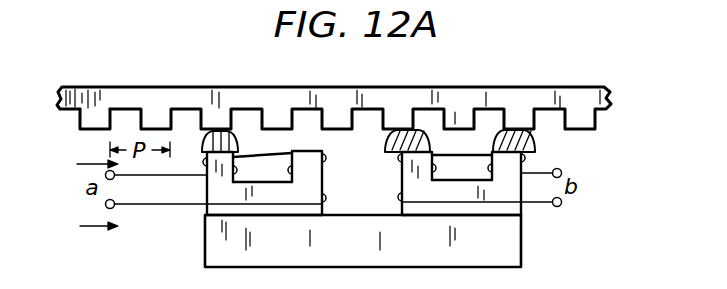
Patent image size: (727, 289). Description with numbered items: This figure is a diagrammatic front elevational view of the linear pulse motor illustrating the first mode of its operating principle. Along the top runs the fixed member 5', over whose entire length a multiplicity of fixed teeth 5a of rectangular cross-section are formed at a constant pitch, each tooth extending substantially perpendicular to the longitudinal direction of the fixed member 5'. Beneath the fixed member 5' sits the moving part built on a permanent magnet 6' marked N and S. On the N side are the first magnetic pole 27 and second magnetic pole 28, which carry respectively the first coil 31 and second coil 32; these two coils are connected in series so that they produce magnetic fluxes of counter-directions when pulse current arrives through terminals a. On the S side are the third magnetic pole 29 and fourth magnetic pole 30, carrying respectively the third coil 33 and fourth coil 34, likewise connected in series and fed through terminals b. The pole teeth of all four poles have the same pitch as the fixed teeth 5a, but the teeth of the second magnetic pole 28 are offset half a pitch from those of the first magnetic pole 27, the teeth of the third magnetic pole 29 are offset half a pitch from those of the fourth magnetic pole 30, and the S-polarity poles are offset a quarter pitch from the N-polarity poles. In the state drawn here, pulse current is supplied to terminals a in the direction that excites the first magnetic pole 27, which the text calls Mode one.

The fixed member 5' is at (334, 90).
The fixed teeth 5a is at (92, 132).
The permanent magnet 6' is at (330, 241).
The first magnetic pole 27 is at (237, 147).
The second magnetic pole 28 is at (305, 151).
The third magnetic pole 29 is at (425, 152).
The fourth magnetic pole 30 is at (494, 155).
The first coil 31 is at (205, 152).
The second coil 32 is at (284, 157).
The third coil 33 is at (393, 152).
The fourth coil 34 is at (525, 153).